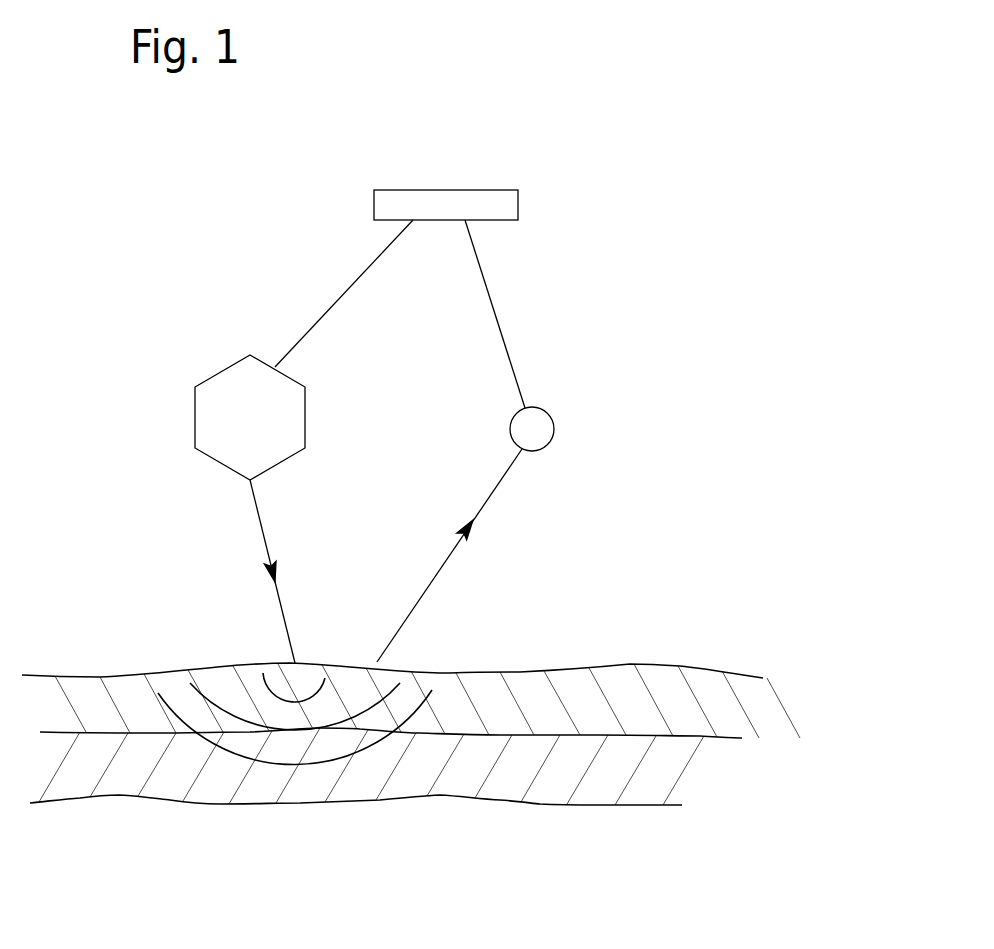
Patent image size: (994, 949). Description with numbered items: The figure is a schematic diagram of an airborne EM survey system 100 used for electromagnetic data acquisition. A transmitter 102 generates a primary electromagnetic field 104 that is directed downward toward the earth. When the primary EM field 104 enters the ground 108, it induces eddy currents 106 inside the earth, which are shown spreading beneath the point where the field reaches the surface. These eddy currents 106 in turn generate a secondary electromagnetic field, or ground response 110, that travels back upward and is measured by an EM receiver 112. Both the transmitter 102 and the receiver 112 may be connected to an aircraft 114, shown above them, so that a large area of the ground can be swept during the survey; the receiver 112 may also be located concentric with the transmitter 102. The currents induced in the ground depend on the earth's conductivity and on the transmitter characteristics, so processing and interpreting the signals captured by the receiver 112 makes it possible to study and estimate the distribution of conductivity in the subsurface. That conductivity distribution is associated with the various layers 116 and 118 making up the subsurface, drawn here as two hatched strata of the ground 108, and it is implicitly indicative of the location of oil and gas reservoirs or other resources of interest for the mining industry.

The airborne EM survey system 100 is at (470, 128).
The transmitter 102 is at (301, 383).
The primary electromagnetic field 104 is at (278, 598).
The eddy currents 106 is at (300, 763).
The ground 108 is at (411, 734).
The ground response 110 is at (447, 565).
The EM receiver 112 is at (553, 420).
The aircraft 114 is at (513, 190).
The layer 116 is at (540, 714).
The layer 118 is at (526, 789).